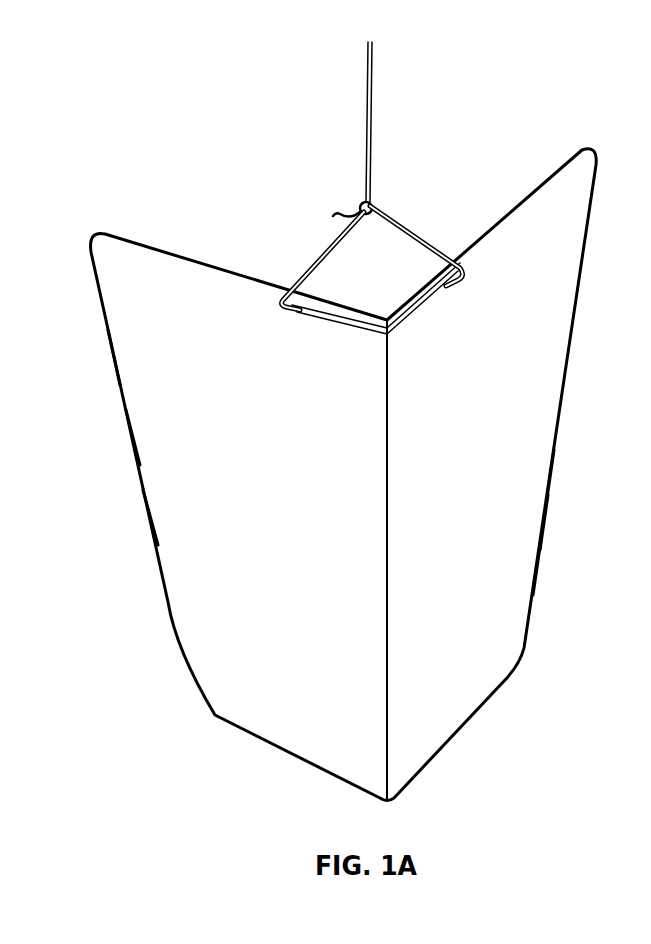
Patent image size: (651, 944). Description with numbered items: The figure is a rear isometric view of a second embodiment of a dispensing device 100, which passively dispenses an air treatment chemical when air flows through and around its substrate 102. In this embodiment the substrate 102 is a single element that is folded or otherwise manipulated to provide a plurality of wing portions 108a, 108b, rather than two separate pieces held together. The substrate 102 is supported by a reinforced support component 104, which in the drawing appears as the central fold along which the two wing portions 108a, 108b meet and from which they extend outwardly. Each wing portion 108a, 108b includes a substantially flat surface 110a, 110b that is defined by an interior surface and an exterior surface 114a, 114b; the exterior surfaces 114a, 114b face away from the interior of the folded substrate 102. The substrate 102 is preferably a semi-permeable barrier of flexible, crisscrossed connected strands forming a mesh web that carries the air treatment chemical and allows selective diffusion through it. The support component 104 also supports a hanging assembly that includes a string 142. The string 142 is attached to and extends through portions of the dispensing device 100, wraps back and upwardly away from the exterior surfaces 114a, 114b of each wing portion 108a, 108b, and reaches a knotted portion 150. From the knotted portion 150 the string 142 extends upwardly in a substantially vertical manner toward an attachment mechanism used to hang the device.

The dispensing device 100 is at (107, 80).
The substrate 102 is at (558, 356).
The support component 104 is at (388, 478).
The wing portion 108a is at (121, 367).
The wing portion 108b is at (543, 478).
The substantially flat surface 110a is at (139, 443).
The substantially flat surface 110b is at (536, 522).
The exterior surface 114a is at (157, 525).
The exterior surface 114b is at (529, 568).
The string 142 is at (372, 104).
The knotted portion 150 is at (372, 200).